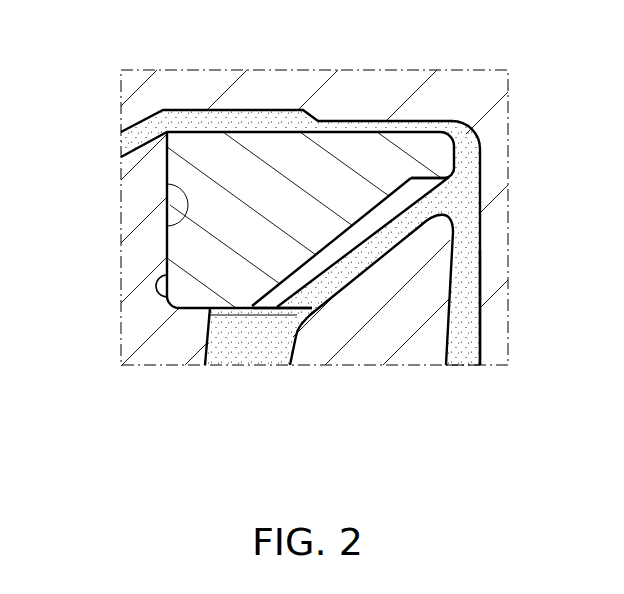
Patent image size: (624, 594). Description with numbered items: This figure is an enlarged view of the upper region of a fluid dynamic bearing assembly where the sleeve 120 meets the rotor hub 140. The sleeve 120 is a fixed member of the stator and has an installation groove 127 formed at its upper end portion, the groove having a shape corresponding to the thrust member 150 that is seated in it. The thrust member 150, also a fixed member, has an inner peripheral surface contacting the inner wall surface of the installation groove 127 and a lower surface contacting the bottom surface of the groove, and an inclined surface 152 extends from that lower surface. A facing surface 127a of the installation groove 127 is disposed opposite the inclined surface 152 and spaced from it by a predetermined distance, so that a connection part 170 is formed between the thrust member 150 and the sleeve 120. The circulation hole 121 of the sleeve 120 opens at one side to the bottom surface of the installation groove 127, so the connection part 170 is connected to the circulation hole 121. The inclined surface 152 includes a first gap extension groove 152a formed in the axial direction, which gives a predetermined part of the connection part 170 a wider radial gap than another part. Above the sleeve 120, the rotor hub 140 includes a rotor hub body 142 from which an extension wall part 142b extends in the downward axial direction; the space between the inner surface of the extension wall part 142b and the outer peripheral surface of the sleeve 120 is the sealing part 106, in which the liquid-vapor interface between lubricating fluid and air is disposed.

The sealing part 106 is at (462, 340).
The sleeve 120 is at (166, 342).
The circulation hole 121 is at (252, 343).
The installation groove 127 is at (167, 183).
The facing surface 127a is at (341, 281).
The rotor hub 140 is at (300, 192).
The rotor hub body 142 is at (410, 50).
The extension wall part 142b is at (497, 328).
The thrust member 150 is at (280, 160).
The inclined surface 152 is at (418, 206).
The first gap extension groove 152a is at (413, 192).
The connection part 170 is at (375, 243).